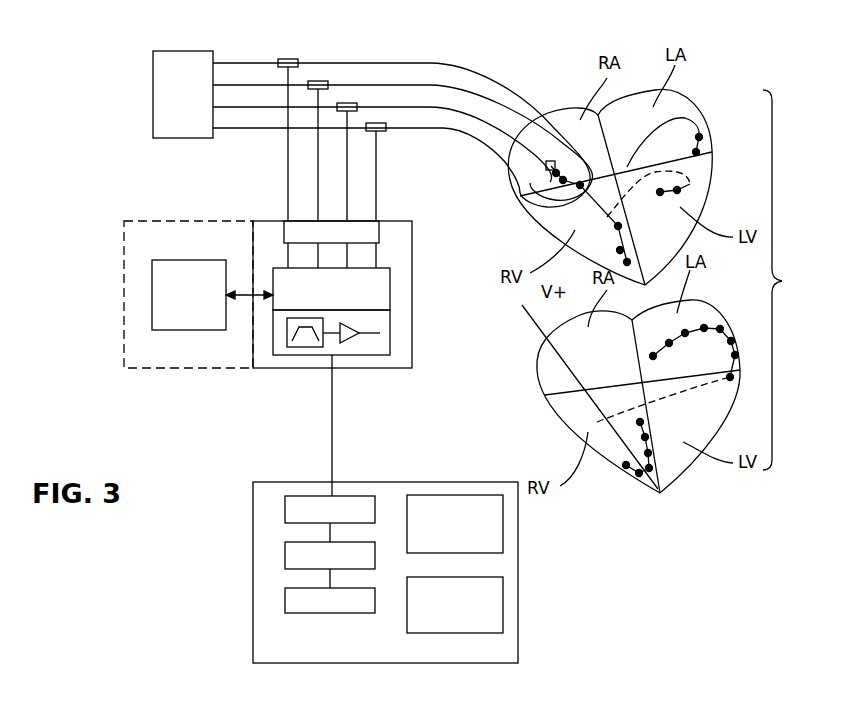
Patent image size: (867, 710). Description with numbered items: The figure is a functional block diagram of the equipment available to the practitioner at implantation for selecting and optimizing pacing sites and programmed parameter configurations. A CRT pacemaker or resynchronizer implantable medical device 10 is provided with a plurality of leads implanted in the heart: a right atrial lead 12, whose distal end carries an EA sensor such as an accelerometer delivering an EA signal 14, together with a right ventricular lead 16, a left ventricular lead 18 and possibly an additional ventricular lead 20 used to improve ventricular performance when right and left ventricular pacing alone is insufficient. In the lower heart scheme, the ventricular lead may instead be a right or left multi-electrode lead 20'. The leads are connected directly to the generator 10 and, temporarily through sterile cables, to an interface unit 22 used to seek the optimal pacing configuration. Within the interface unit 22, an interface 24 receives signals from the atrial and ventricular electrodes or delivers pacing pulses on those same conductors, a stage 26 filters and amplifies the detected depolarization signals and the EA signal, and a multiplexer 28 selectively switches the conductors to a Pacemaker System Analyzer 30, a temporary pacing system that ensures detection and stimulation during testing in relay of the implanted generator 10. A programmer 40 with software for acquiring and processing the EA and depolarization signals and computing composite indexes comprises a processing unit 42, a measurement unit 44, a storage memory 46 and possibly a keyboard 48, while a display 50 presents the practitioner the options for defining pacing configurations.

The implantable medical device 10 is at (153, 100).
The right atrial lead 12 is at (403, 123).
The EA signal 14 is at (552, 165).
The right ventricular lead 16 is at (482, 93).
The left ventricular lead 18 is at (447, 112).
The additional ventricular lead 20 is at (366, 160).
The multi-electrode ventricular lead 20' is at (566, 397).
The interface unit 22 is at (365, 279).
The interface 24 is at (382, 232).
The filter and amplifier stage 26 is at (392, 337).
The multiplexer 28 is at (395, 290).
The Pacemaker System Analyzer 30 is at (124, 297).
The programmer 40 is at (385, 535).
The processing unit 42 is at (330, 509).
The measurement unit 44 is at (330, 555).
The storage memory 46 is at (330, 600).
The keyboard 48 is at (455, 605).
The display 50 is at (455, 524).